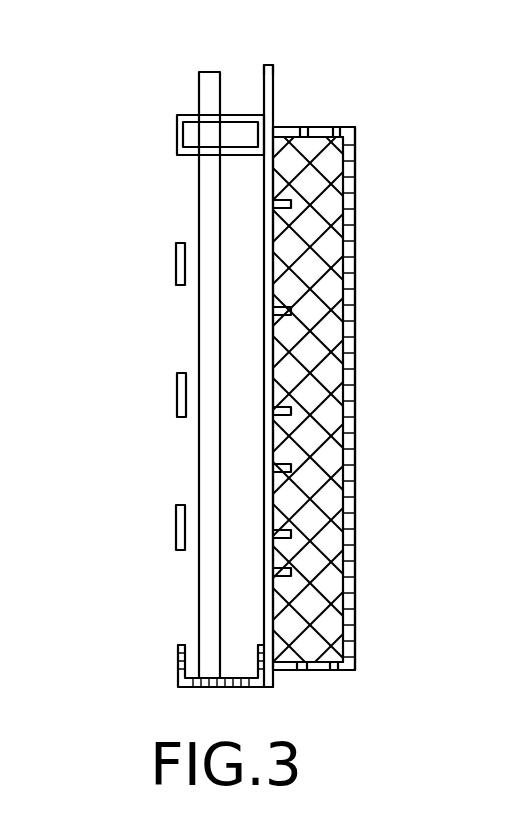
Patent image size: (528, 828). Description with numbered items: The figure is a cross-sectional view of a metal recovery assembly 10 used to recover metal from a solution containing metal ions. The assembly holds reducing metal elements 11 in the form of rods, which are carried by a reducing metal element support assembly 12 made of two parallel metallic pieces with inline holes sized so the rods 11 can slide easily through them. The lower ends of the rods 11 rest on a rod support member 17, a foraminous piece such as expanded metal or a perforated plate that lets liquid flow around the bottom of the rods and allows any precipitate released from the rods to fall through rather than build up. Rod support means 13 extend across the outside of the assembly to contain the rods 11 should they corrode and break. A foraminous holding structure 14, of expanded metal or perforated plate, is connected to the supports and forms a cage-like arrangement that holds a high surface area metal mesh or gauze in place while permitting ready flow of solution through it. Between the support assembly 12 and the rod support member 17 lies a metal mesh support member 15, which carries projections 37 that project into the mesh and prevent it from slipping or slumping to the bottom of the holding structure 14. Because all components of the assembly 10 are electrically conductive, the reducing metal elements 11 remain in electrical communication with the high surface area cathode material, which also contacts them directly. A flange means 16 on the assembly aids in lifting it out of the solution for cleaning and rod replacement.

The metal recovery assembly 10 is at (274, 103).
The reducing metal elements 11 is at (198, 91).
The reducing metal element support assembly 12 is at (176, 133).
The rod support means 13 is at (176, 263).
The holding structure 14 is at (356, 295).
The metal mesh support member 15 is at (264, 490).
The flange means 16 is at (268, 65).
The rod support member 17 is at (177, 667).
The projections 37 is at (300, 198).